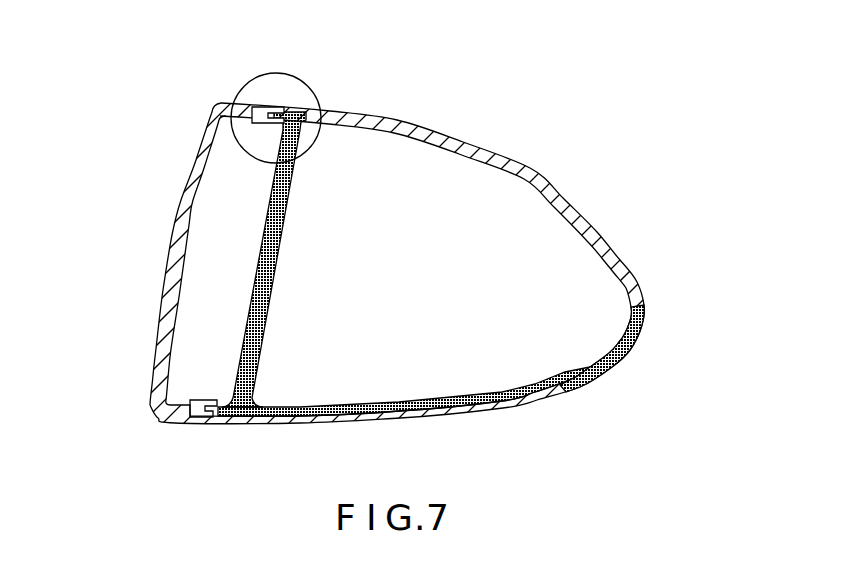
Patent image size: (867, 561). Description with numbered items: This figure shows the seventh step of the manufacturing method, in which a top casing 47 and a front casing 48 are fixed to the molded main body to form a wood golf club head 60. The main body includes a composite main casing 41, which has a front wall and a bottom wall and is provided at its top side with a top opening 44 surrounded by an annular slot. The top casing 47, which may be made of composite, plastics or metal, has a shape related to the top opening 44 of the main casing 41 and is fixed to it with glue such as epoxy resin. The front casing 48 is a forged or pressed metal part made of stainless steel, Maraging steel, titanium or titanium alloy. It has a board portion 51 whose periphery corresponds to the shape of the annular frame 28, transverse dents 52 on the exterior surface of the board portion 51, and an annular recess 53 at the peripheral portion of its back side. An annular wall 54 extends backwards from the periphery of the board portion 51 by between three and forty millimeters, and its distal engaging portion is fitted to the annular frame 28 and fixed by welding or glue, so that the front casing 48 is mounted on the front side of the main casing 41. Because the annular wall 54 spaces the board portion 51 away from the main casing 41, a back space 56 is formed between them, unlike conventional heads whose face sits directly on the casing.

The annular frame 28 is at (267, 110).
The main casing 41 is at (621, 374).
The top opening 44 is at (479, 177).
The top casing 47 is at (567, 200).
The front casing 48 is at (433, 280).
The board portion 51 is at (198, 145).
The transverse dents 52 is at (178, 225).
The annular recess 53 is at (174, 400).
The annular wall 54 is at (250, 102).
The back space 56 is at (205, 308).
The wood golf club head 60 is at (433, 280).